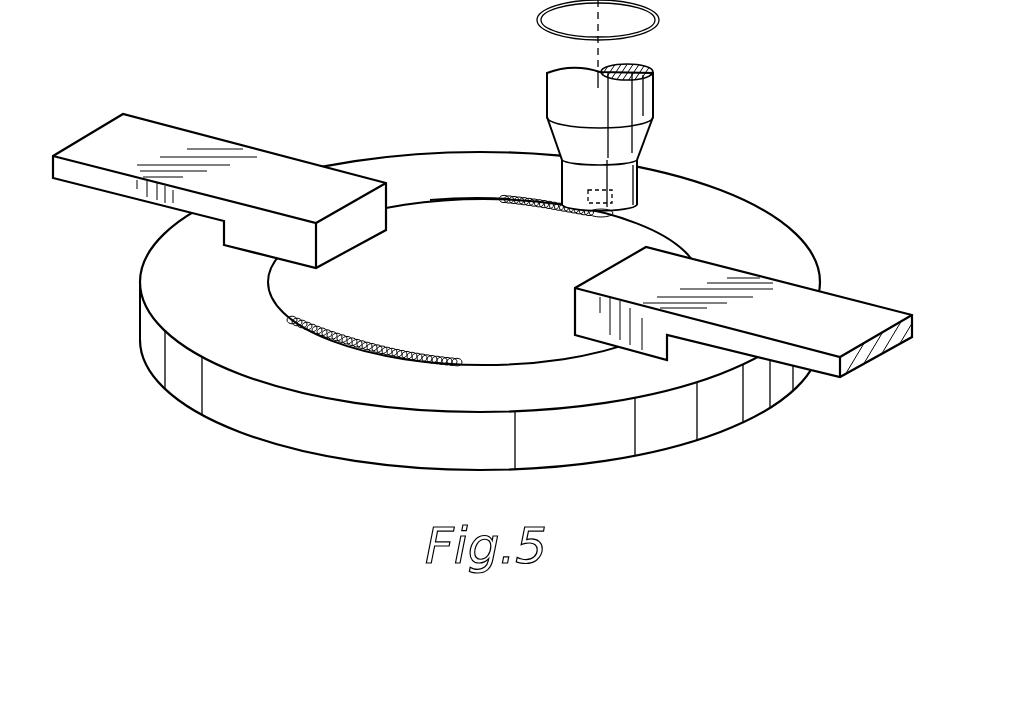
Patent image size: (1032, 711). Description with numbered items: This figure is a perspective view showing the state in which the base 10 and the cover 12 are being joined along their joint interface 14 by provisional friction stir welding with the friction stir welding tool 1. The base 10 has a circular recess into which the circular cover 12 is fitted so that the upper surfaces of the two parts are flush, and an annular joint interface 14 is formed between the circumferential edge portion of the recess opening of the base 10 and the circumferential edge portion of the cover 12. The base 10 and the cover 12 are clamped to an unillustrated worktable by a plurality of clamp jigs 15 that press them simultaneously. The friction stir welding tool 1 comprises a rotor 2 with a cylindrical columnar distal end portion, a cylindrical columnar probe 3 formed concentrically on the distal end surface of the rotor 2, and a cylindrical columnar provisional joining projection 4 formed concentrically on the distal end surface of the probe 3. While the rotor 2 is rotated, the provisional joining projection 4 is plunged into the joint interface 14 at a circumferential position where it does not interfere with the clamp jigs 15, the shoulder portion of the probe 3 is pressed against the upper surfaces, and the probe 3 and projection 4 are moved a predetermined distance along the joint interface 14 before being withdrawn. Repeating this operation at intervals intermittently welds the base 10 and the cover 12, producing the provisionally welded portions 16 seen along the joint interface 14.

The friction stir welding tool 1 is at (645, 135).
The rotor 2 is at (640, 172).
The probe 3 is at (614, 214).
The provisional joining projection 4 is at (592, 213).
The base 10 is at (183, 403).
The cover 12 is at (468, 222).
The joint interface 14 is at (437, 200).
The clamp jigs 15 is at (189, 137).
The provisionally welded portion 16 is at (540, 207).